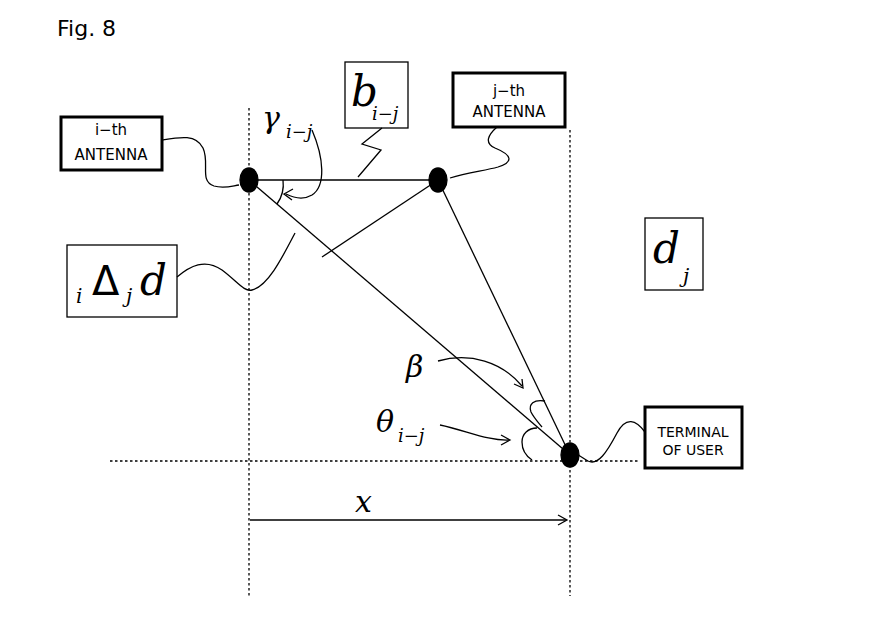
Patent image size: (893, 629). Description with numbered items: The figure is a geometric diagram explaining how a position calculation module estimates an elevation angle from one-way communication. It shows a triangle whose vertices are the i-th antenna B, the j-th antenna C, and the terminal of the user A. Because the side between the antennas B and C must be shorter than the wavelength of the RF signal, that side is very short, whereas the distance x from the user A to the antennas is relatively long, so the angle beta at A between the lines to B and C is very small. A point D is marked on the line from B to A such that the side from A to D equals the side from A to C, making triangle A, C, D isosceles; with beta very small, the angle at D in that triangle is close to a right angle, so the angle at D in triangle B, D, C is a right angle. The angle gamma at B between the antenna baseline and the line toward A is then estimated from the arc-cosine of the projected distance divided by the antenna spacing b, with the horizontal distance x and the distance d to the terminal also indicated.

The terminal of user vertex A is at (559, 469).
The i-th antenna vertex B is at (249, 167).
The j-th antenna vertex C is at (438, 167).
The point D on side AB D is at (322, 267).